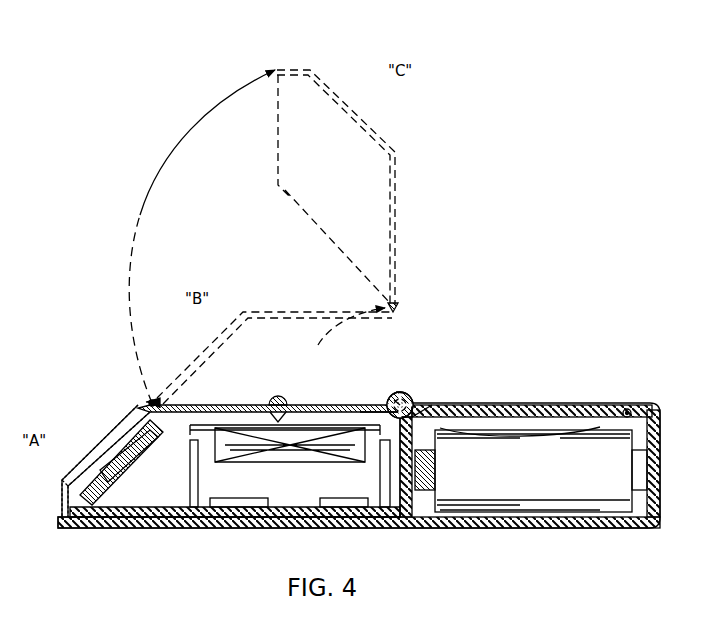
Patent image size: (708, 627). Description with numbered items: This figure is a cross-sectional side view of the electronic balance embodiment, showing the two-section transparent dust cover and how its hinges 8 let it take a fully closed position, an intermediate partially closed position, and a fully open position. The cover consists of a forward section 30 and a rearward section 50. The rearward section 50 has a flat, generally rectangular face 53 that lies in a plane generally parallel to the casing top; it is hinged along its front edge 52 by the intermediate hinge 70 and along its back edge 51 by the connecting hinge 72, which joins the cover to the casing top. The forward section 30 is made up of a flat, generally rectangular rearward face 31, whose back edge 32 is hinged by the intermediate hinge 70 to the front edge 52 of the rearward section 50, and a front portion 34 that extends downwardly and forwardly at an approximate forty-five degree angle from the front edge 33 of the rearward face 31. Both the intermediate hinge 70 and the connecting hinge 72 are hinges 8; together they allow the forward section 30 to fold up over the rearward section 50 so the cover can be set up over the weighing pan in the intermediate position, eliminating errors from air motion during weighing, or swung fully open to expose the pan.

The hinge 8 is at (398, 306).
The forward section 30 is at (402, 187).
The rearward face 31 is at (220, 404).
The back edge 32 is at (275, 404).
The front edge 33 is at (150, 402).
The front portion 34 is at (117, 416).
The rearward section 50 is at (412, 350).
The back edge 51 is at (380, 402).
The front edge 52 is at (306, 398).
The face 53 is at (370, 408).
The intermediate hinge 70 is at (296, 392).
The connecting hinge 72 is at (410, 393).